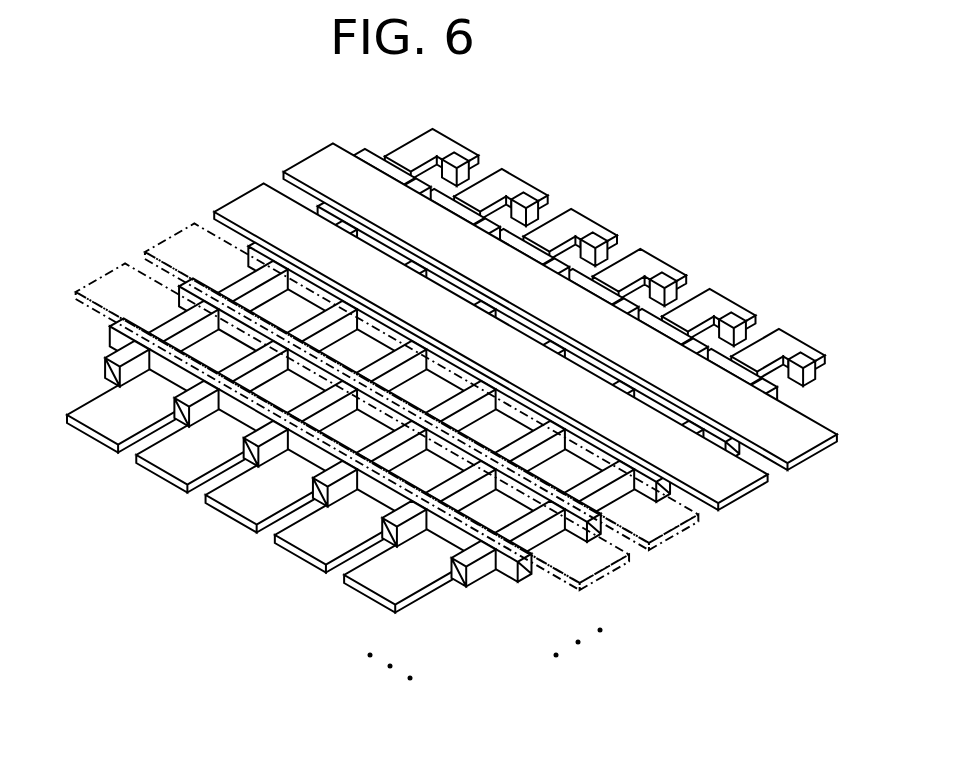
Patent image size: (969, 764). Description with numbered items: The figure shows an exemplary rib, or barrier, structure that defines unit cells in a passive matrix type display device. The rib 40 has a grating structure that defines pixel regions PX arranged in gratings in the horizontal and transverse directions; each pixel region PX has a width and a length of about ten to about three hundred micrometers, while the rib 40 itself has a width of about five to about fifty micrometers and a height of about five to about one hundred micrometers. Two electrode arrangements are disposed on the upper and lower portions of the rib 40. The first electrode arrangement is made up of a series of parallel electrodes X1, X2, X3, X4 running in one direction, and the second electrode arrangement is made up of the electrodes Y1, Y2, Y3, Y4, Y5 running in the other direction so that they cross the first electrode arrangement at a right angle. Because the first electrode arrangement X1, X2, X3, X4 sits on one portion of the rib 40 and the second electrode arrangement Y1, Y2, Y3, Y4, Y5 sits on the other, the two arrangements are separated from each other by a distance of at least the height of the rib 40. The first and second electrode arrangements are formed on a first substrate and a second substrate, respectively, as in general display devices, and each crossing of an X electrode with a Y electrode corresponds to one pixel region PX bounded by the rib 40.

The rib 40 is at (98, 366).
The pixel region PX is at (214, 324).
The first electrode arrangement electrode X1 is at (815, 454).
The first electrode arrangement electrode X2 is at (747, 491).
The first electrode arrangement electrode X3 is at (678, 528).
The first electrode arrangement electrode X4 is at (609, 572).
The second electrode arrangement electrode Y1 is at (99, 447).
The second electrode arrangement electrode Y2 is at (169, 486).
The second electrode arrangement electrode Y3 is at (238, 526).
The second electrode arrangement electrode Y4 is at (308, 566).
The second electrode arrangement electrode Y5 is at (377, 604).